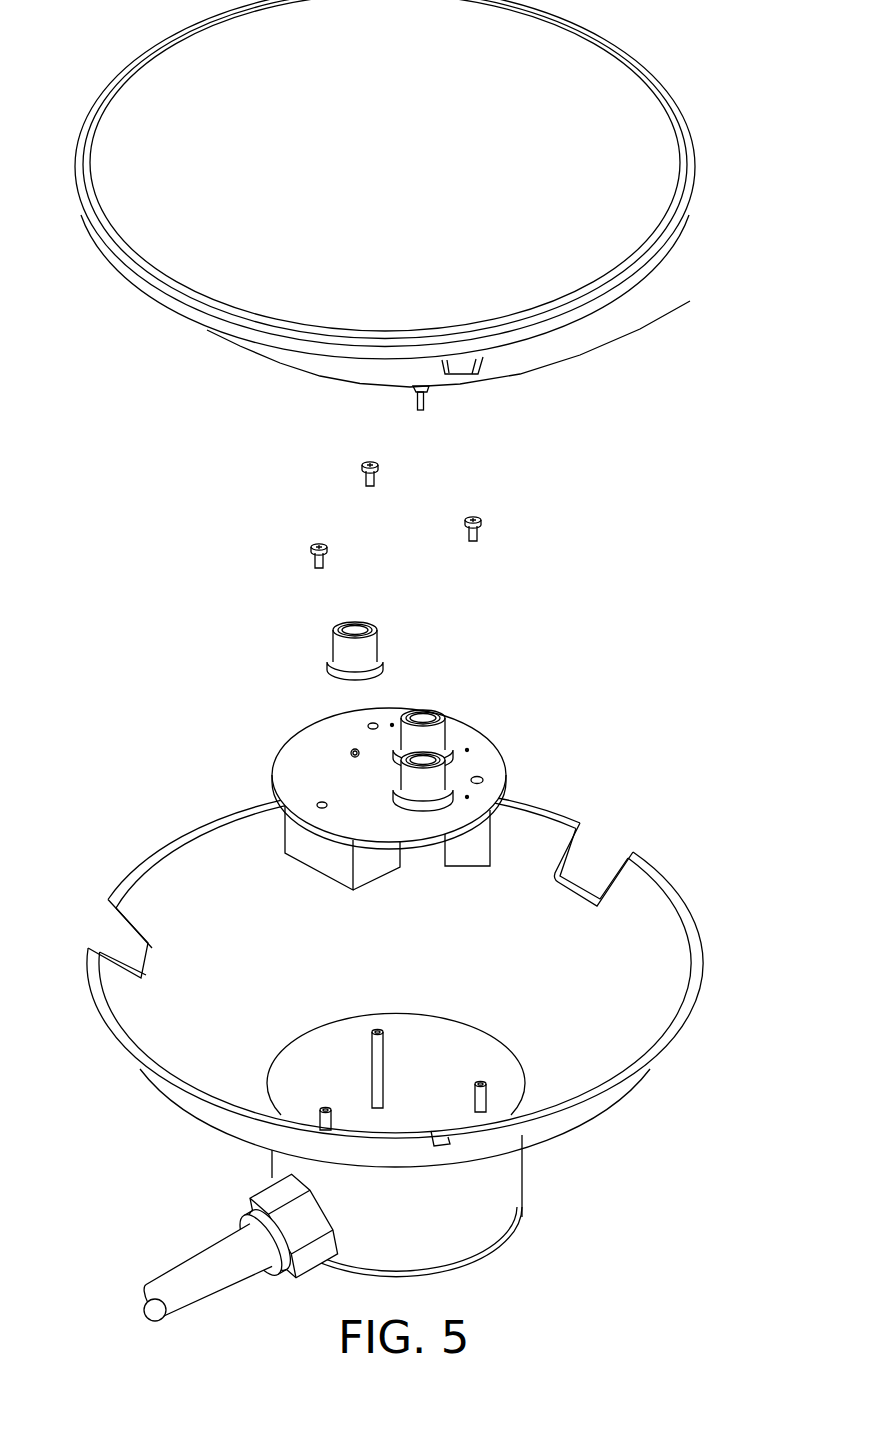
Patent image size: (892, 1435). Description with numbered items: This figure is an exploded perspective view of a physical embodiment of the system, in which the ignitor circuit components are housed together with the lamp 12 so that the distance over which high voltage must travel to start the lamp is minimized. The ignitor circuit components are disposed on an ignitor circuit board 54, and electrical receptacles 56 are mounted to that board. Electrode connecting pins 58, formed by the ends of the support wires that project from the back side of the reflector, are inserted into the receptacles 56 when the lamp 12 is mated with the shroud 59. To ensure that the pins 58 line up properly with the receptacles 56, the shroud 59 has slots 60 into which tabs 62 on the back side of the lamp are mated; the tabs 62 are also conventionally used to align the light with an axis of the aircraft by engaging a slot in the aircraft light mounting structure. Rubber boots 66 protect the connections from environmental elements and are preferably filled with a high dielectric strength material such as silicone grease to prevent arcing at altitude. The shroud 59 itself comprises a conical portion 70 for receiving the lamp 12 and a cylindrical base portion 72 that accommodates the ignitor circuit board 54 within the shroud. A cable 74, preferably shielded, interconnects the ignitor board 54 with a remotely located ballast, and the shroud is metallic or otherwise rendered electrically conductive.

The lamp 12 is at (568, 273).
The tabs 62 is at (462, 367).
The electrode connecting pins 58 is at (432, 428).
The rubber boots 66 is at (388, 645).
The ignitor circuit board 54 is at (486, 720).
The electrical receptacles 56 is at (351, 751).
The slots 60 is at (582, 884).
The conical portion 70 is at (660, 975).
The shroud 59 is at (552, 1130).
The cylindrical base portion 72 is at (508, 1207).
The cable 74 is at (184, 1250).